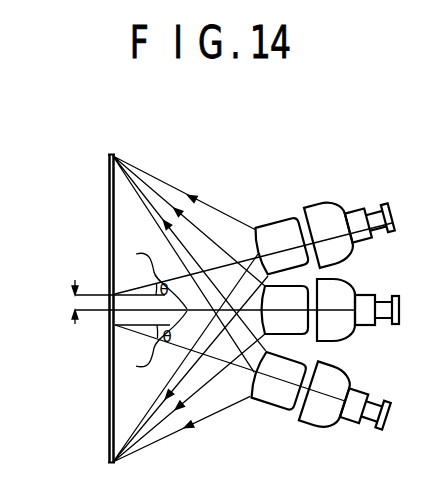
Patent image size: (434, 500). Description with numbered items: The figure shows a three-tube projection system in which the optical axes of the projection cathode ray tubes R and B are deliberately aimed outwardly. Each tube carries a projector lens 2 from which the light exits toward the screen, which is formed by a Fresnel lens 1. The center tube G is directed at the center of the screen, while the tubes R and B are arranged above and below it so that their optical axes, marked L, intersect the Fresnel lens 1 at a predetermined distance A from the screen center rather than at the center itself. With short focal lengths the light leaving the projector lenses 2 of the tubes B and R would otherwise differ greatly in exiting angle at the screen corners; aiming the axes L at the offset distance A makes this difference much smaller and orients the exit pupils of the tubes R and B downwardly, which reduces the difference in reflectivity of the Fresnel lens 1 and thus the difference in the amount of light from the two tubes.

The Fresnel lens 1 is at (108, 198).
The projector lens 2 is at (277, 218).
The tube R is at (351, 227).
The tube G is at (358, 310).
The tube B is at (347, 403).
The predetermined distance A is at (62, 302).
The optical axis L is at (154, 306).